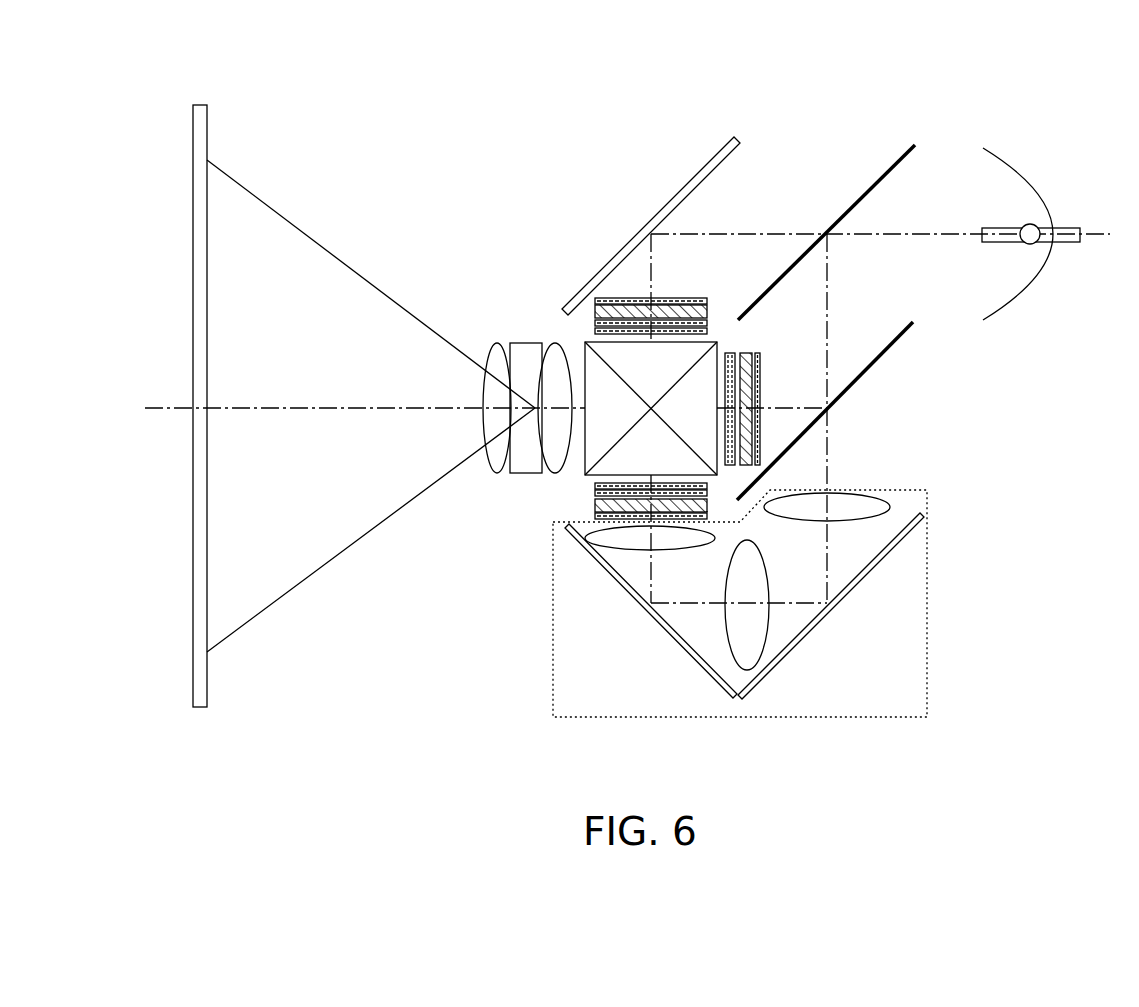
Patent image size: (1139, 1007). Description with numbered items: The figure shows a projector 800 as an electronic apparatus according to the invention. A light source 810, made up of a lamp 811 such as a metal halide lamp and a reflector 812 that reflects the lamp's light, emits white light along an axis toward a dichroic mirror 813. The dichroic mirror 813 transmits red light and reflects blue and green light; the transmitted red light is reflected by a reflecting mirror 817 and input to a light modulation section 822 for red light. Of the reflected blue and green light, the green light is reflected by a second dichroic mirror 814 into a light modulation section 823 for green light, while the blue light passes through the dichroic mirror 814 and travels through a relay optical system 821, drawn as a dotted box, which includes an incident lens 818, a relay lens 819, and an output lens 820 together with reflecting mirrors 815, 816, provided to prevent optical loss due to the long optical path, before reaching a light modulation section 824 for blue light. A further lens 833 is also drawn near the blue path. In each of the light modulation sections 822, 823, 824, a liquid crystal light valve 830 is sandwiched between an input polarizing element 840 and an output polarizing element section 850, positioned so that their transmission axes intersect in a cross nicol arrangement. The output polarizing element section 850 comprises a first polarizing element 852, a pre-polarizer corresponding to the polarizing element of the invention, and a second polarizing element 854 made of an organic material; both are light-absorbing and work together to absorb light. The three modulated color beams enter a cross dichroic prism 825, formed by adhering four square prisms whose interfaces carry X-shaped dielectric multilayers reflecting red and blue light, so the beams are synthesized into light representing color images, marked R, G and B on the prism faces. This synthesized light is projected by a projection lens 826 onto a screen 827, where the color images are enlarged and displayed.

The projector 800 is at (268, 142).
The light source 810 is at (1059, 206).
The lamp 811 is at (1037, 226).
The reflector 812 is at (1033, 290).
The dichroic mirror 813 is at (882, 178).
The dichroic mirror 814 is at (904, 331).
The reflecting mirror 815 is at (892, 553).
The reflecting mirror 816 is at (662, 628).
The reflecting mirror 817 is at (690, 185).
The incident lens 818 is at (852, 498).
The relay lens 819 is at (758, 623).
The output lens 820 is at (620, 543).
The relay optical system 821 is at (788, 572).
The light modulation section 822 is at (578, 264).
The light modulation section 823 is at (778, 372).
The light modulation section 824 is at (584, 509).
The cross dichroic prism 825 is at (713, 342).
The projection lens 826 is at (572, 473).
The screen 827 is at (196, 708).
The liquid crystal light valve 830 is at (597, 306).
The lens 833 is at (707, 511).
The input polarizing element 840 is at (622, 298).
The output polarizing element section 850 is at (578, 283).
The first polarizing element 852 is at (596, 316).
The second polarizing element 854 is at (596, 330).